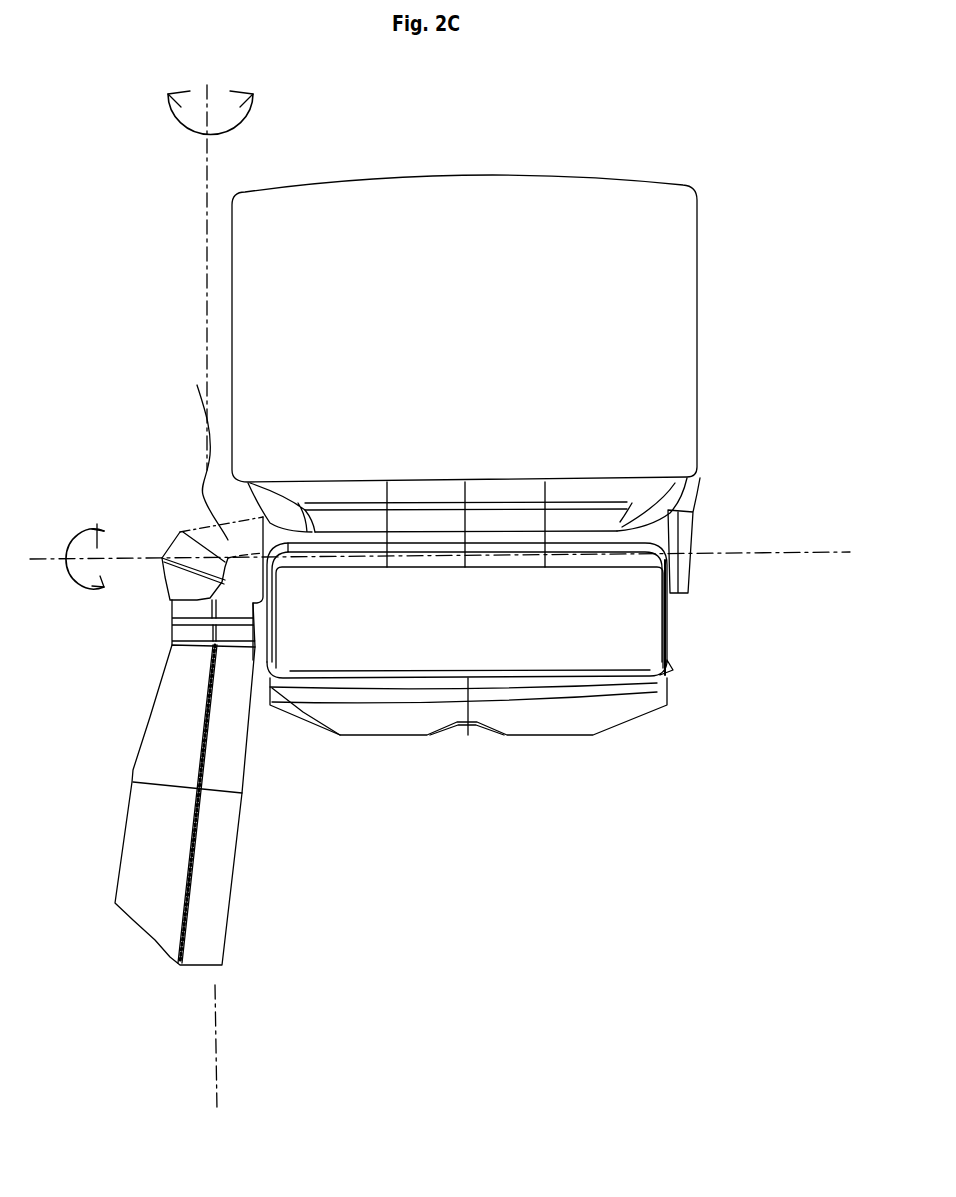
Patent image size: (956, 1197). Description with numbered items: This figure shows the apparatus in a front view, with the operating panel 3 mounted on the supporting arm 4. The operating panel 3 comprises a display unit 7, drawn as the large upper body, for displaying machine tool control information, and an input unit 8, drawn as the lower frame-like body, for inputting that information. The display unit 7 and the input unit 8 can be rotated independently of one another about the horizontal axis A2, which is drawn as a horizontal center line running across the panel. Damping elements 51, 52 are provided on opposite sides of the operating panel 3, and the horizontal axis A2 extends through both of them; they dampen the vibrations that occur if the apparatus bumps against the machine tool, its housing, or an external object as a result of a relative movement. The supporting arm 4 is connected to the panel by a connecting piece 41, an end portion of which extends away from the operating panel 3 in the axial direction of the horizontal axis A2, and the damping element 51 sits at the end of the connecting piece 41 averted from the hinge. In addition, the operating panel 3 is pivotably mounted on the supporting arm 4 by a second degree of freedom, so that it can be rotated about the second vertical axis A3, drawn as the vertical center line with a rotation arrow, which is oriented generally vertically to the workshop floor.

The operating panel 3 is at (458, 431).
The supporting arm 4 is at (240, 850).
The display unit 7 is at (525, 245).
The input unit 8 is at (585, 650).
The connecting piece 41 is at (215, 503).
The damping element 51 is at (178, 537).
The damping element 52 is at (687, 527).
The horizontal axis A2 is at (800, 552).
The second vertical axis A3 is at (207, 157).